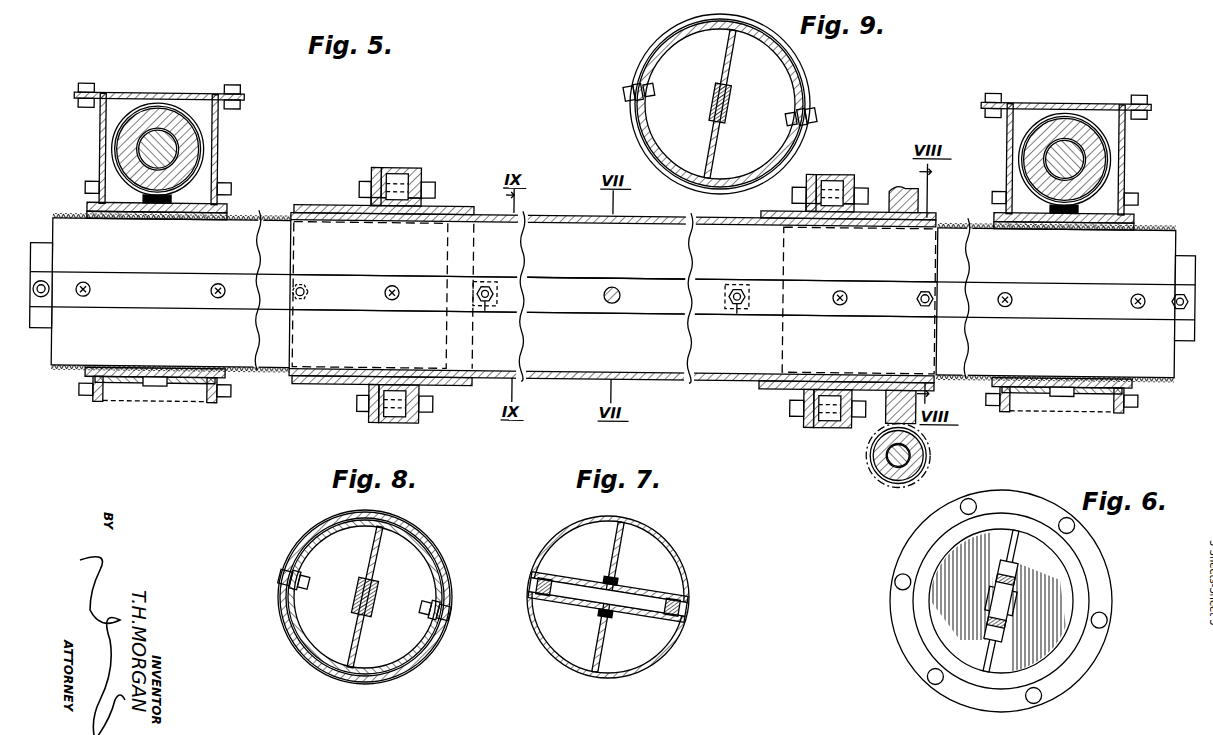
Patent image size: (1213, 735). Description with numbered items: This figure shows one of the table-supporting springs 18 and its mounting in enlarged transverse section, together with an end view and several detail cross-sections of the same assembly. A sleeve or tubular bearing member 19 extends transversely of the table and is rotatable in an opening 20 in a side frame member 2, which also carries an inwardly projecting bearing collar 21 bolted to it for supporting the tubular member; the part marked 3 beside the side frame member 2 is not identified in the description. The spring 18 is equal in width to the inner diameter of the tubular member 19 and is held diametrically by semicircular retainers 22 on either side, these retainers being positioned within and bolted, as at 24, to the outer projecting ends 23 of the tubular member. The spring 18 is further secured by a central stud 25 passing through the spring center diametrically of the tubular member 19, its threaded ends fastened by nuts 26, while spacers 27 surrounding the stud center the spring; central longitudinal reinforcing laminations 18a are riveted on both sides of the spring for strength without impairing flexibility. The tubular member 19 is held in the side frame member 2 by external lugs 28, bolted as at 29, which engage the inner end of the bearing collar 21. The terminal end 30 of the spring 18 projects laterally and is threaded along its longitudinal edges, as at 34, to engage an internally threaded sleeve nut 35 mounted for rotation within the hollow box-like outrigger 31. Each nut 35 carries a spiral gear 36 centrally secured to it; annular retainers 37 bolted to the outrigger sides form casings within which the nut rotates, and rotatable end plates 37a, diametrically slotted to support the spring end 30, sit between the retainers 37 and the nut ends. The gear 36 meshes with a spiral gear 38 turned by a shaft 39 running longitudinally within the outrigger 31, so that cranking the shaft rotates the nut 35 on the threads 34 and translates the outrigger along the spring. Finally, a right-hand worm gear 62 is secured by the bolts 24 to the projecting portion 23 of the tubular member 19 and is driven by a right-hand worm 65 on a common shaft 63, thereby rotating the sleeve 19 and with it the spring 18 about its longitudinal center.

In FIG. 5, the side frame members 2 is at (397, 170).
In FIG. 5, the clamp plate 3 is at (410, 172).
In FIG. 5, the springs 18 is at (625, 270).
In FIG. 9, the springs 18 is at (728, 58).
In FIG. 8, the springs 18 is at (395, 540).
In FIG. 7, the springs 18 is at (616, 556).
In FIG. 5, the central longitudinal reinforcing laminations 18a is at (1085, 305).
In FIG. 8, the central longitudinal reinforcing laminations 18a is at (372, 600).
In FIG. 7, the central longitudinal reinforcing laminations 18a is at (600, 608).
In FIG. 5, the tubular bearing members 19 is at (640, 216).
In FIG. 9, the tubular bearing members 19 is at (795, 92).
In FIG. 8, the tubular bearing members 19 is at (438, 544).
In FIG. 7, the tubular bearing members 19 is at (578, 530).
In FIG. 5, the openings 20 is at (396, 213).
In FIG. 5, the bearing collars 21 is at (446, 210).
In FIG. 9, the bearing collars 21 is at (800, 72).
In FIG. 5, the semicircular retainers 22 is at (322, 221).
In FIG. 8, the semicircular retainers 22 is at (322, 532).
In FIG. 5, the outer projecting ends 23 is at (316, 214).
In FIG. 5, the bolts 24 is at (303, 303).
In FIG. 8, the bolts 24 is at (276, 578).
In FIG. 5, the central studs 25 is at (609, 303).
In FIG. 7, the central studs 25 is at (668, 594).
In FIG. 7, the nuts 26 is at (534, 578).
In FIG. 7, the spacers 27 is at (574, 580).
In FIG. 5, the external lugs 28 is at (500, 283).
In FIG. 9, the external lugs 28 is at (640, 80).
In FIG. 5, the bolts 29 is at (486, 308).
In FIG. 9, the bolts 29 is at (626, 88).
In FIG. 5, the terminal ends 30 is at (612, 294).
In FIG. 6, the terminal ends 30 is at (1014, 548).
In FIG. 5, the outriggers 31 is at (178, 98).
In FIG. 5, the threads 34 is at (75, 220).
In FIG. 5, the sleeve nuts 35 is at (192, 372).
In FIG. 5, the spiral gear 36 is at (155, 222).
In FIG. 5, the annular retainers 37 is at (178, 392).
In FIG. 6, the annular retainers 37 is at (1062, 654).
In FIG. 5, the rotatable end plates 37a is at (220, 222).
In FIG. 6, the rotatable end plates 37a is at (982, 602).
In FIG. 5, the spiral gear 38 is at (196, 152).
In FIG. 5, the shafts 39 is at (150, 152).
In FIG. 5, the right hand worm gear 62 is at (918, 200).
In FIG. 5, the common shaft 63 is at (928, 450).
In FIG. 5, the right-hand worms 65 is at (930, 462).